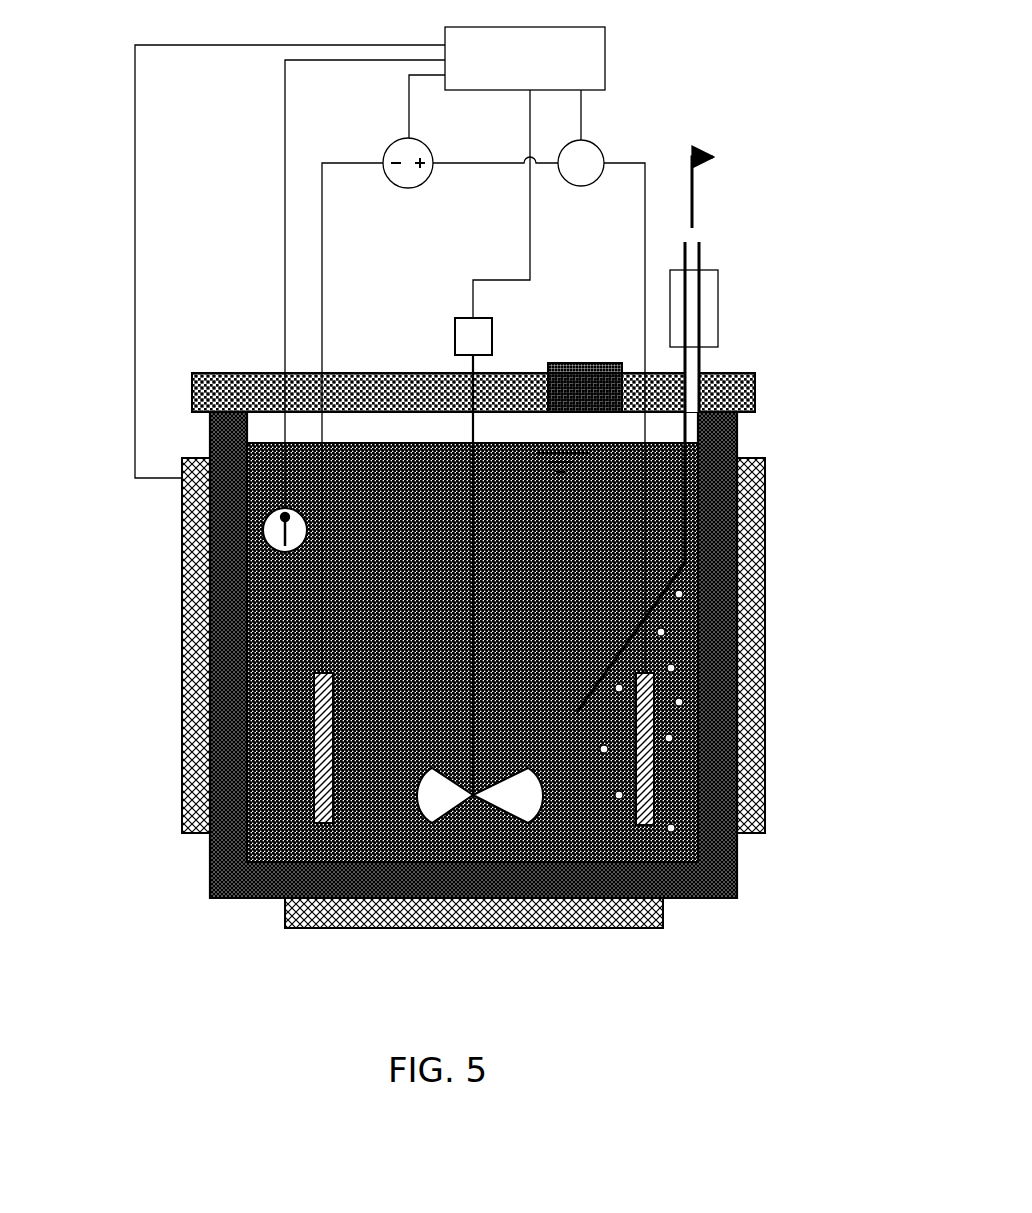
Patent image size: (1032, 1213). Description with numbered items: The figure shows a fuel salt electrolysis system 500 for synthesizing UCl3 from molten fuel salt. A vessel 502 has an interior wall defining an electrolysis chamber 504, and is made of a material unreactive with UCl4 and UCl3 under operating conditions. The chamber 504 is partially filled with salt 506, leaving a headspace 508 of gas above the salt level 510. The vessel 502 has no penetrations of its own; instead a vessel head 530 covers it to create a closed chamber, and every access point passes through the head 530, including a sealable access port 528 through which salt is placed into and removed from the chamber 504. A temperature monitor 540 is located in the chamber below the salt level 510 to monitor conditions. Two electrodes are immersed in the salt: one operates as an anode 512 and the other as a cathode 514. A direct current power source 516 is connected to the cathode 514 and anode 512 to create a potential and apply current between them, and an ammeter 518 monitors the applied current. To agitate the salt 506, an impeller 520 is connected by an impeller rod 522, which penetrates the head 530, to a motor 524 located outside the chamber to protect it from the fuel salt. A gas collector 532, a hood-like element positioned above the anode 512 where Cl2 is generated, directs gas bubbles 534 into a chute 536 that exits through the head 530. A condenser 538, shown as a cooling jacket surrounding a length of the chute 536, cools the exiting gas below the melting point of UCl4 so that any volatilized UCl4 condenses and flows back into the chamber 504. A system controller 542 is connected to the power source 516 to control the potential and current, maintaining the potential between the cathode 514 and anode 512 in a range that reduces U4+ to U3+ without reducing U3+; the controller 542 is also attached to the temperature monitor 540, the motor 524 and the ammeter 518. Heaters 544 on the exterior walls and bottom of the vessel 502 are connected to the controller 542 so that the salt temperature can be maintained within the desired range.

The fuel salt electrolysis system 500 is at (785, 65).
The vessel 502 is at (715, 440).
The electrolysis chamber 504 is at (407, 685).
The salt 506 is at (472, 652).
The headspace 508 is at (399, 418).
The salt level 510 is at (266, 443).
The anode 512 is at (643, 785).
The cathode 514 is at (323, 800).
The direct current power source 516 is at (422, 186).
The ammeter 518 is at (598, 148).
The impeller 520 is at (510, 805).
The impeller rod 522 is at (473, 578).
The motor 524 is at (470, 328).
The sealable access port 528 is at (568, 372).
The vessel head 530 is at (733, 392).
The gas collector 532 is at (630, 632).
The gas bubbles 534 is at (674, 666).
The chute 536 is at (703, 358).
The condenser 538 is at (707, 300).
The temperature monitor 540 is at (263, 530).
The system controller 542 is at (605, 33).
The heaters 544 is at (190, 632).